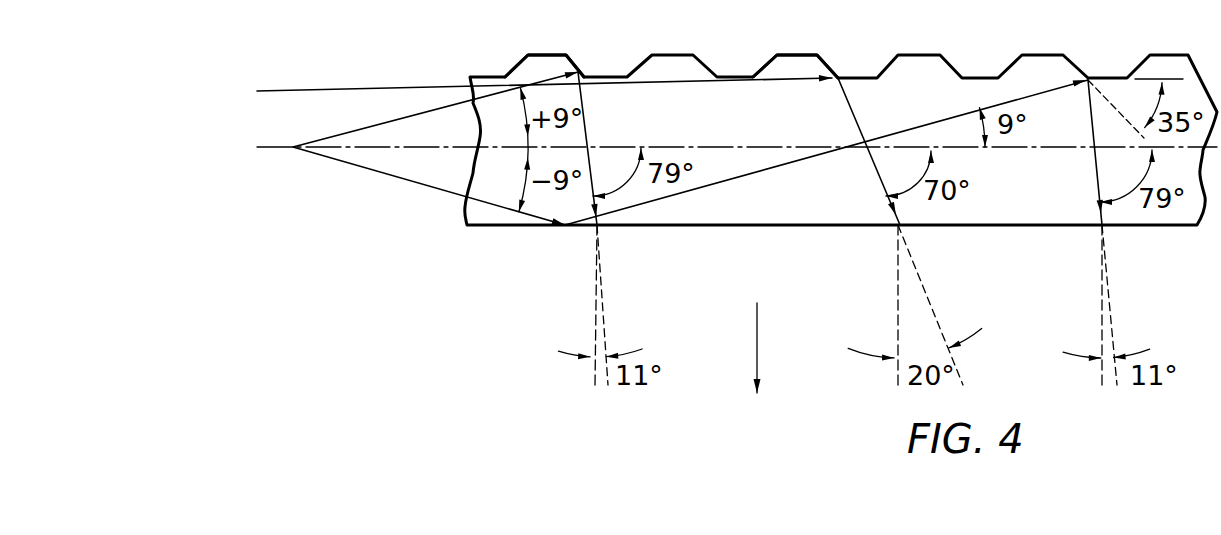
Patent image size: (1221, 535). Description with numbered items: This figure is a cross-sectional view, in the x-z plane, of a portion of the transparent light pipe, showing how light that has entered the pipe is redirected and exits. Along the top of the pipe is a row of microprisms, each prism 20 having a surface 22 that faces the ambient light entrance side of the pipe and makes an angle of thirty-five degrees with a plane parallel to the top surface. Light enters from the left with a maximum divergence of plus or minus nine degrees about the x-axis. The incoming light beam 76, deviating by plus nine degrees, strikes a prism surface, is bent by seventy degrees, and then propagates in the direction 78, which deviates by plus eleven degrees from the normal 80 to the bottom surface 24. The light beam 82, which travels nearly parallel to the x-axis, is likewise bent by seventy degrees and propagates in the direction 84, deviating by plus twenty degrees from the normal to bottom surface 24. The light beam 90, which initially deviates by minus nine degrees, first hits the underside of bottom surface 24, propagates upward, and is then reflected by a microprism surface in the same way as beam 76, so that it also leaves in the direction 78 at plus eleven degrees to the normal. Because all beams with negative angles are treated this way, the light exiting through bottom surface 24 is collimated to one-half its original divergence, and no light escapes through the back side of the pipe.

The prism 20 is at (581, 52).
The surface of prism 22 is at (794, 52).
The bottom surface 24 is at (1155, 225).
The incoming light beam 76 is at (410, 114).
The direction of propagation 78 is at (606, 337).
The normal 80 is at (594, 313).
The light beam 82 is at (323, 88).
The direction of propagation 84 is at (953, 357).
The light beam 90 is at (383, 174).